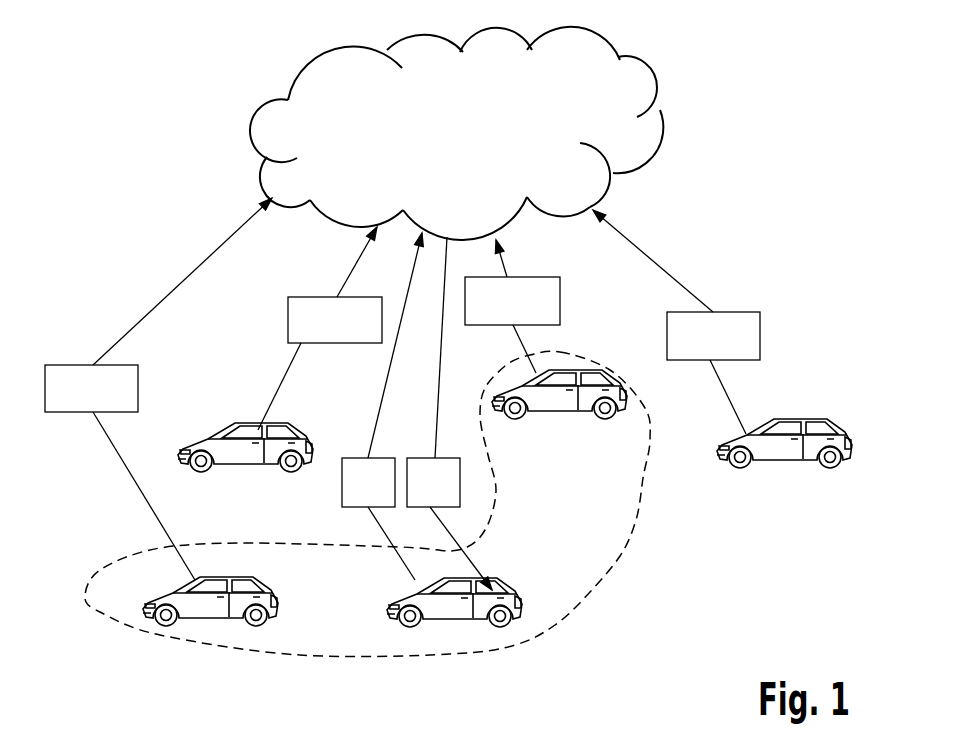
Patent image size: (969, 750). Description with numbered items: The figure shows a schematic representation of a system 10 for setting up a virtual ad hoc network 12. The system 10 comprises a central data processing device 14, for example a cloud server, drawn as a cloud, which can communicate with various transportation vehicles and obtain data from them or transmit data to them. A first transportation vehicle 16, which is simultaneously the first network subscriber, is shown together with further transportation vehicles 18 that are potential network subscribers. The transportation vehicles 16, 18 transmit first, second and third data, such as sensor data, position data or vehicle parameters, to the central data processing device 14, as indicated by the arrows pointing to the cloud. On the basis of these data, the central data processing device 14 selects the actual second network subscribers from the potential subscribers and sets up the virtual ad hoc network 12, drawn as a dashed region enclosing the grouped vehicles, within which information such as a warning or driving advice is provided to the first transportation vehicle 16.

The system 10 is at (238, 80).
The virtual ad hoc network 12 is at (600, 570).
The central data processing device 14 is at (663, 133).
The first transportation vehicle 16 is at (455, 626).
The further transportation vehicles 18 is at (197, 443).